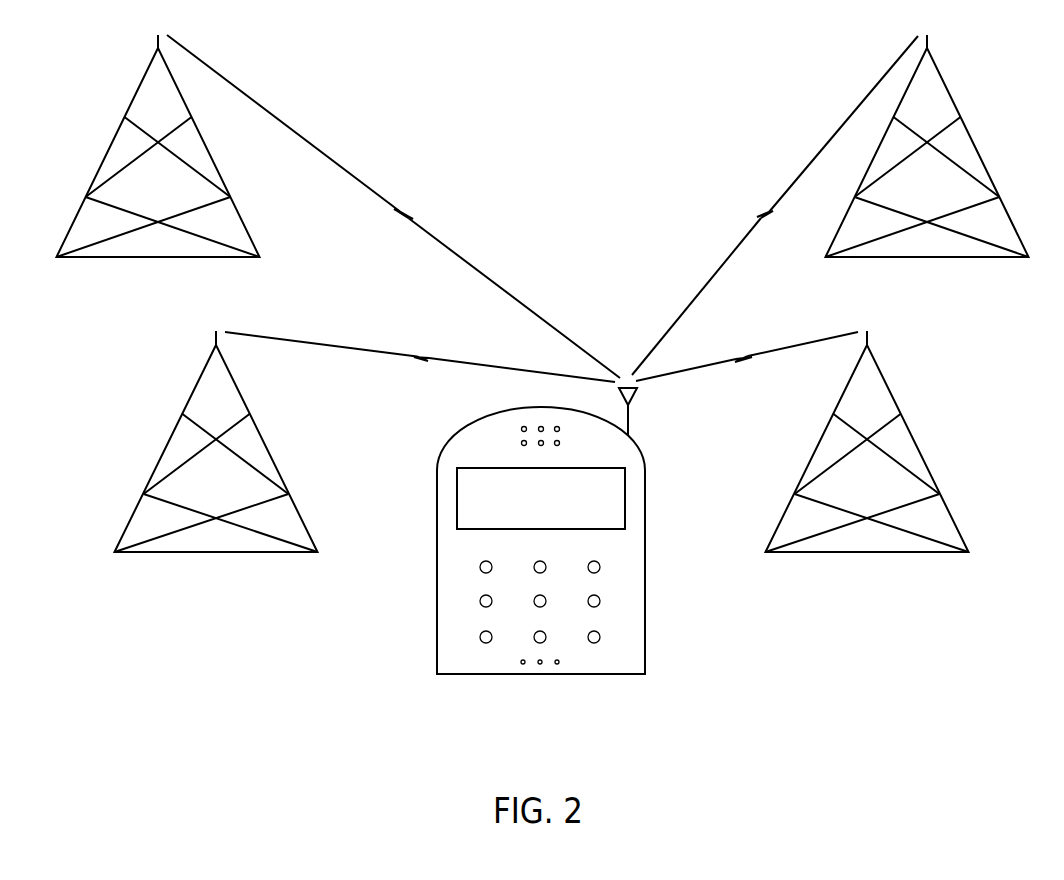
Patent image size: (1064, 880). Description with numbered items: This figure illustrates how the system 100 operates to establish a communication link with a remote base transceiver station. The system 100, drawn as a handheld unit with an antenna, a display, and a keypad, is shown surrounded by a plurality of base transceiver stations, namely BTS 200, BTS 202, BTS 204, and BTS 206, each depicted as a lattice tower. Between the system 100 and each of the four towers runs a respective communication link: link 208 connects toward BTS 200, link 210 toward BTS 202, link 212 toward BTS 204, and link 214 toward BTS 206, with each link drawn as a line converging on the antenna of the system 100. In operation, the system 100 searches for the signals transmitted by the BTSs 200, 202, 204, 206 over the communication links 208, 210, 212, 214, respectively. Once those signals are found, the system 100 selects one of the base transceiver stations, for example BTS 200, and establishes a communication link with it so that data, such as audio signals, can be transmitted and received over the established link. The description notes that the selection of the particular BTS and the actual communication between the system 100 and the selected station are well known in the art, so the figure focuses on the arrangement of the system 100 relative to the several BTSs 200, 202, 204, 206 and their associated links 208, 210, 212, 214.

The system 100 is at (541, 556).
The BTS 200 is at (927, 161).
The BTS 202 is at (867, 456).
The BTS 204 is at (158, 161).
The BTS 206 is at (216, 456).
The communication link 208 is at (817, 153).
The communication link 210 is at (800, 342).
The communication link 212 is at (302, 136).
The communication link 214 is at (305, 339).